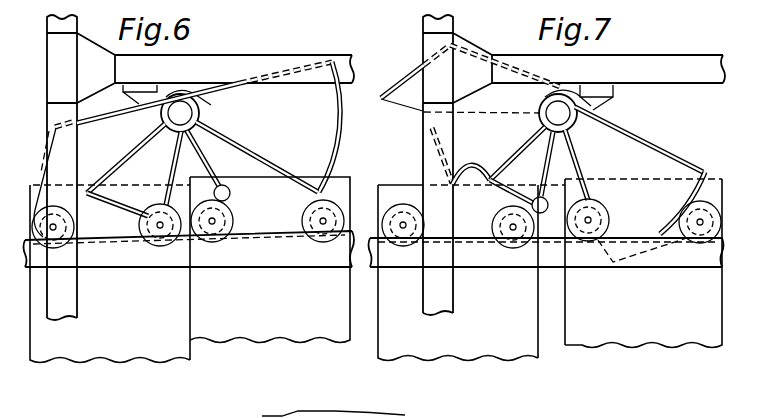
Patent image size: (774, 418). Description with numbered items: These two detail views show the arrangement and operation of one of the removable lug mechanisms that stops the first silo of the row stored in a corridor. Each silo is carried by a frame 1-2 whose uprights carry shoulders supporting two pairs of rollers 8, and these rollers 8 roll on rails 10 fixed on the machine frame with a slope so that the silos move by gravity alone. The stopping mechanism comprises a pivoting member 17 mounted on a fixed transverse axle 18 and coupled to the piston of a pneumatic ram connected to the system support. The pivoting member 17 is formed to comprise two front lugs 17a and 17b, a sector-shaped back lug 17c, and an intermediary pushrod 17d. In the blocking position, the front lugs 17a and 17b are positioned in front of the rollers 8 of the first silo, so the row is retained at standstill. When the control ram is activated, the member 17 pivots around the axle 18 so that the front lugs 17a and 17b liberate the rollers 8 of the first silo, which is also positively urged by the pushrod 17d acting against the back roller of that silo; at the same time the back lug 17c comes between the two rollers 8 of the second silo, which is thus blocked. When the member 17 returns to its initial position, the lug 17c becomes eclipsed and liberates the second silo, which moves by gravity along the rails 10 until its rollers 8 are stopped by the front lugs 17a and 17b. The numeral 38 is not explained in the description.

In FIG. 6, the silo and frame 1-2 is at (91, 348).
In FIG. 7, the silo and frame 1-2 is at (478, 343).
In FIG. 6, the rollers 8 is at (40, 265).
In FIG. 7, the rollers 8 is at (402, 246).
In FIG. 6, the rails 10 is at (256, 252).
In FIG. 7, the rails 10 is at (478, 253).
In FIG. 6, the pivoting member 17 is at (348, 112).
In FIG. 7, the pivoting member 17 is at (670, 107).
In FIG. 6, the front lug 17a is at (38, 202).
In FIG. 7, the front lug 17a is at (390, 103).
In FIG. 6, the front lug 17b is at (143, 206).
In FIG. 7, the front lug 17b is at (473, 173).
In FIG. 6, the sector-shaped back lug 17c is at (287, 117).
In FIG. 7, the sector-shaped back lug 17c is at (660, 234).
In FIG. 6, the intermediary pushrod 17d is at (258, 157).
In FIG. 7, the intermediary pushrod 17d is at (560, 200).
In FIG. 7, the fixed transverse axle 18 is at (562, 112).
In FIG. 7, the element 38 is at (569, 413).